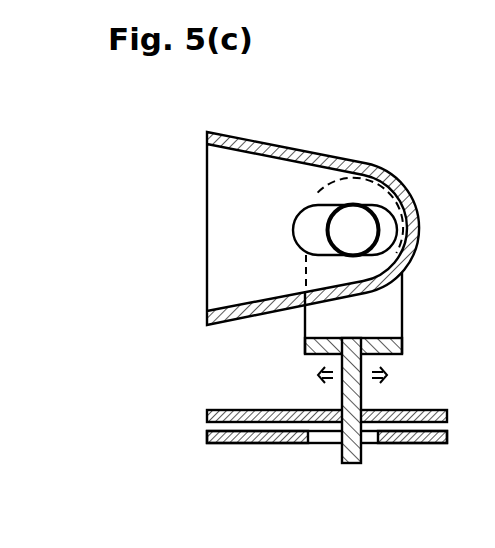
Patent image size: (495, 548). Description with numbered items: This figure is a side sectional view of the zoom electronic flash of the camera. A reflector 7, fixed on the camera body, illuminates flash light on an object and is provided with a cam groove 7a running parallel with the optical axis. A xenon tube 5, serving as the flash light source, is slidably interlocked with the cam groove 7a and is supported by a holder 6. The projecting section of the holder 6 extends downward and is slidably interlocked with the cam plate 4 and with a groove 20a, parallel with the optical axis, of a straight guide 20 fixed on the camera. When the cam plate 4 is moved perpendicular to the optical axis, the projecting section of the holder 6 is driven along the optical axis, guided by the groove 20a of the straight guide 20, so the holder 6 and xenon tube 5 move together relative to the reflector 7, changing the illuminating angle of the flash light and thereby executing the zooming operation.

The reflector 7 is at (247, 137).
The cam groove 7a is at (300, 213).
The xenon tube 5 is at (349, 224).
The holder 6 is at (385, 320).
The cam plate 4 is at (215, 410).
The straight guide 20 is at (207, 437).
The groove 20a is at (342, 442).